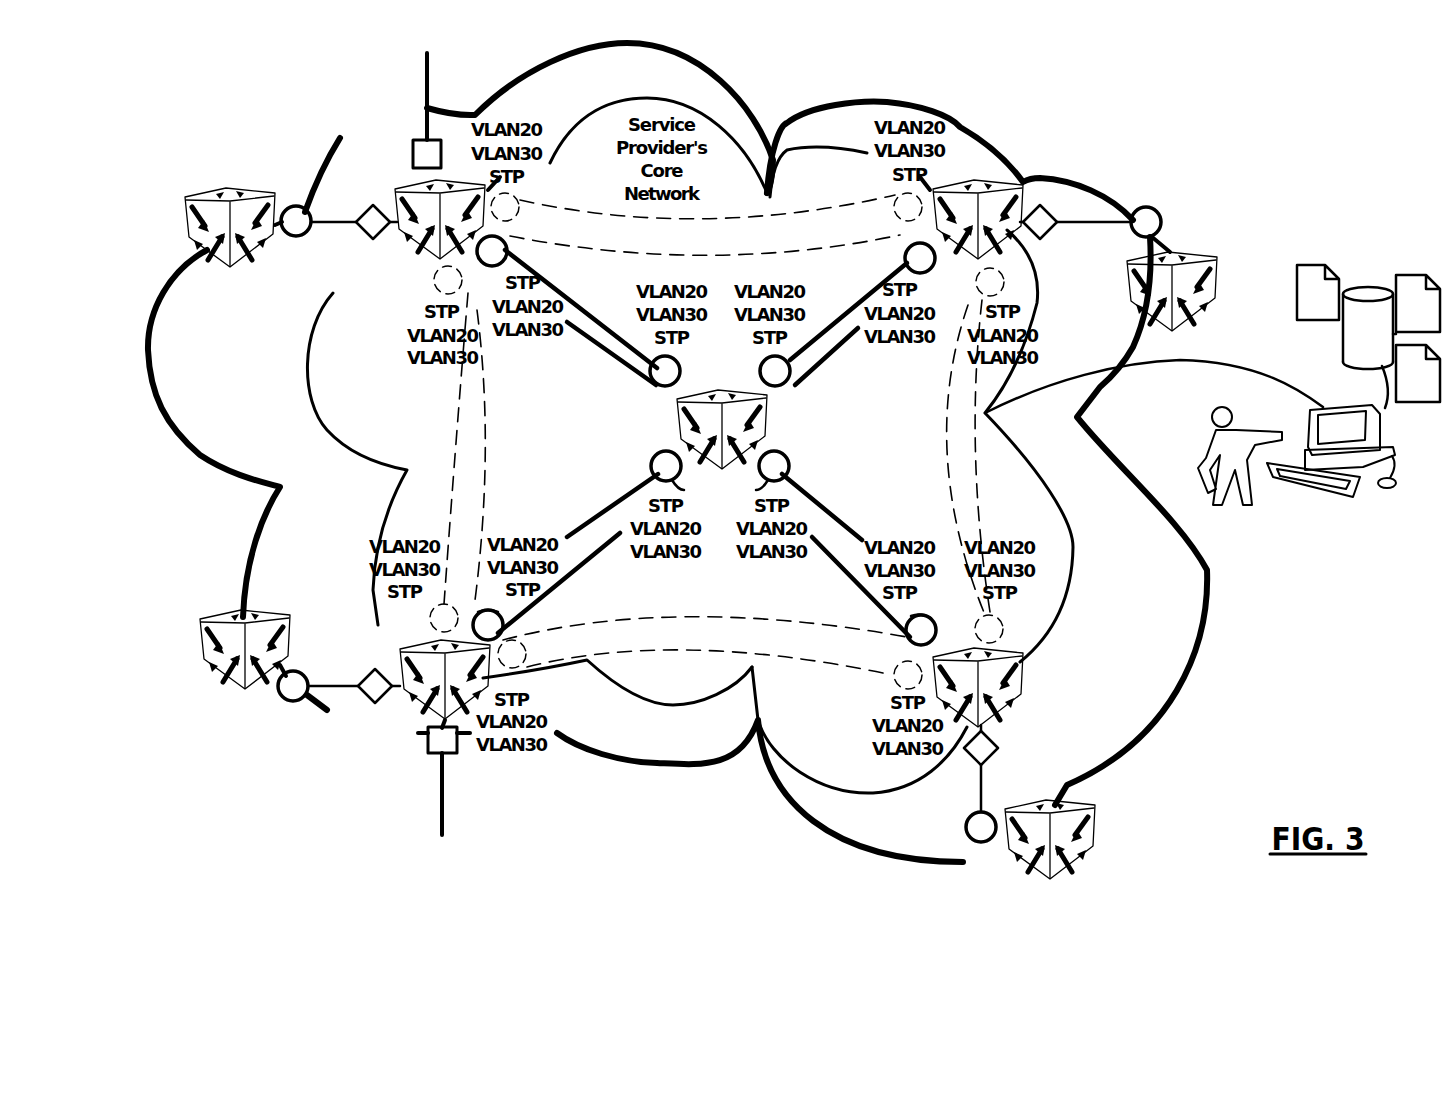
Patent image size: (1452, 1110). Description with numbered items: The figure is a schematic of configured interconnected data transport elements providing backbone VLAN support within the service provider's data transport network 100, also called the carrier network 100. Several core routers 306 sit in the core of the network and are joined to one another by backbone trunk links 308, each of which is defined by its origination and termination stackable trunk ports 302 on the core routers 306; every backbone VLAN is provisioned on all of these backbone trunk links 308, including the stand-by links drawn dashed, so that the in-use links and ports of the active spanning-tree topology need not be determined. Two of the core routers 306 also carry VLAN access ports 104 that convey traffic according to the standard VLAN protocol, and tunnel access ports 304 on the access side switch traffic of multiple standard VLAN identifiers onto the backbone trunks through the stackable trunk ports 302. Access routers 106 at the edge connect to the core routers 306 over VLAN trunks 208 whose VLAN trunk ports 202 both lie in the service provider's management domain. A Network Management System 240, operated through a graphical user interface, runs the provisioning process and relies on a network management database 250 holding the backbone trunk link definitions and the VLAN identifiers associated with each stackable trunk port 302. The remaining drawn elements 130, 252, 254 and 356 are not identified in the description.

The service provider's data transport network 100 is at (247, 463).
The VLAN access port 104 is at (438, 136).
The access router 106 is at (185, 231).
The management link 130 is at (426, 83).
The VLAN trunk port 202 is at (290, 209).
The VLAN trunk 208 is at (323, 217).
The Network Management System 240 is at (1360, 492).
The network management database 250 is at (1366, 290).
The data record 252 is at (1318, 272).
The data record 254 is at (1410, 286).
The stackable trunk port 302 is at (512, 203).
The tunnel access port 304 is at (370, 206).
The core router 306 is at (413, 182).
The backbone trunk link 308 is at (587, 307).
The data record 356 is at (1420, 396).